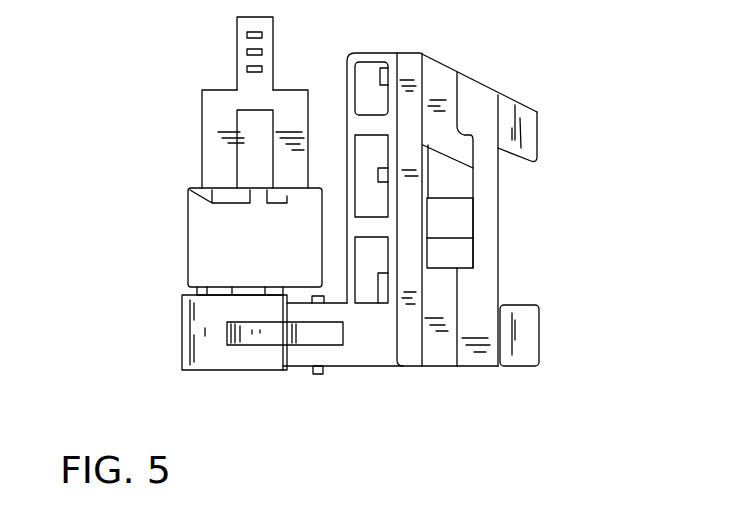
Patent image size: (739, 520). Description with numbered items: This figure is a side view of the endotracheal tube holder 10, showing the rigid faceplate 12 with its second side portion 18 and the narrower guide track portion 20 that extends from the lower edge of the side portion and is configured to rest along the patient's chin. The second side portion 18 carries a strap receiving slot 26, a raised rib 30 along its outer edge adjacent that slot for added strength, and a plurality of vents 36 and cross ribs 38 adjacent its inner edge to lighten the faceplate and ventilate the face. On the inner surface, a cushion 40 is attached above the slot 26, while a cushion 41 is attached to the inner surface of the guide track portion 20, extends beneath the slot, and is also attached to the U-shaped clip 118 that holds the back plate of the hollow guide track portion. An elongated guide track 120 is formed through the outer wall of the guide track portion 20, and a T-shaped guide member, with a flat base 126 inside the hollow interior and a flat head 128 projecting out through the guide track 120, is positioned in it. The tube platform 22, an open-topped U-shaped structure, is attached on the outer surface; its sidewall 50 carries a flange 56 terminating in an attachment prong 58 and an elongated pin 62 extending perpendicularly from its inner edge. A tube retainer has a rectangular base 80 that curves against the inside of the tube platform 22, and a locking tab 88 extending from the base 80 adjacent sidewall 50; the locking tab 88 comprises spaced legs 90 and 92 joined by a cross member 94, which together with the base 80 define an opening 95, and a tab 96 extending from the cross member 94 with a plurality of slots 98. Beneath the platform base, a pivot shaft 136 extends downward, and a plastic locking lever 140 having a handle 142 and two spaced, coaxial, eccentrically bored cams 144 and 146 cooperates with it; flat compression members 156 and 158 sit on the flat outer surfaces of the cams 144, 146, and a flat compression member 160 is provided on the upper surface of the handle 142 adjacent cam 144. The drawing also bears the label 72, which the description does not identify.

The endotracheal tube holder 10 is at (116, 161).
The faceplate 12 is at (430, 60).
The second side portion 18 is at (443, 366).
The guide track portion 20 is at (355, 362).
The tube platform 22 is at (157, 267).
The strap receiving slot 26 is at (447, 176).
The raised rib 30 is at (458, 302).
The vents 36 is at (372, 92).
The cross ribs 38 is at (372, 126).
The cushion 40 is at (538, 141).
The cushion 41 is at (541, 351).
The sidewall 50 is at (203, 267).
The flange 56 is at (246, 205).
The attachment prong 58 is at (250, 205).
The elongated pin 62 is at (333, 206).
The rib 72 is at (468, 234).
The base 80 is at (337, 257).
The locking tab 88 is at (219, 90).
The leg 90 is at (280, 127).
The leg 92 is at (226, 152).
The cross member 94 is at (228, 98).
The opening 95 is at (250, 166).
The tab 96 is at (237, 29).
The slots 98 is at (246, 51).
The clip 118 is at (318, 375).
The guide track 120 is at (346, 337).
The base 126 is at (295, 372).
The head 128 is at (229, 335).
The pivot shaft 136 is at (262, 282).
The locking lever 140 is at (187, 327).
The handle 142 is at (184, 353).
The cam 144 is at (268, 312).
The cam 146 is at (252, 360).
The flat compression member 156 is at (288, 312).
The flat compression member 158 is at (277, 372).
The flat compression member 160 is at (182, 302).